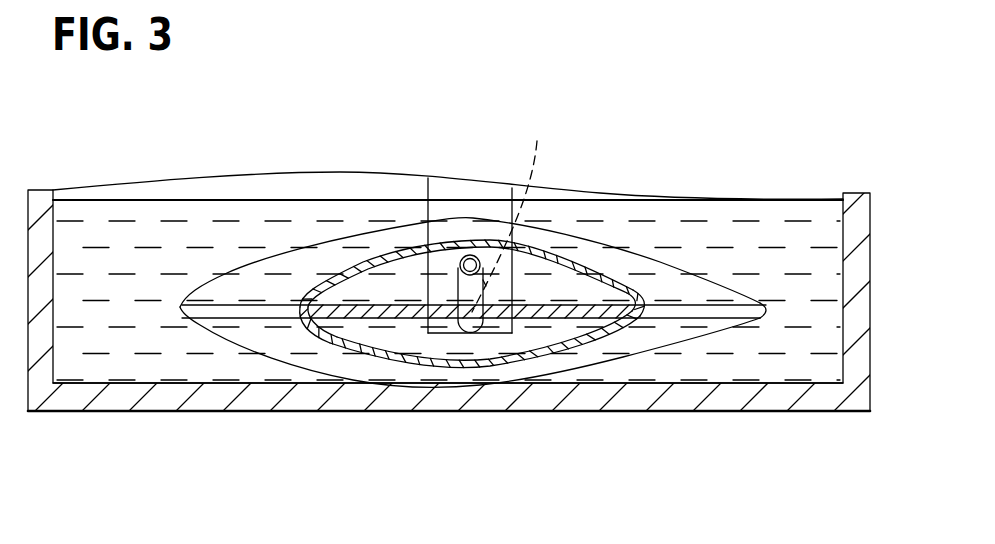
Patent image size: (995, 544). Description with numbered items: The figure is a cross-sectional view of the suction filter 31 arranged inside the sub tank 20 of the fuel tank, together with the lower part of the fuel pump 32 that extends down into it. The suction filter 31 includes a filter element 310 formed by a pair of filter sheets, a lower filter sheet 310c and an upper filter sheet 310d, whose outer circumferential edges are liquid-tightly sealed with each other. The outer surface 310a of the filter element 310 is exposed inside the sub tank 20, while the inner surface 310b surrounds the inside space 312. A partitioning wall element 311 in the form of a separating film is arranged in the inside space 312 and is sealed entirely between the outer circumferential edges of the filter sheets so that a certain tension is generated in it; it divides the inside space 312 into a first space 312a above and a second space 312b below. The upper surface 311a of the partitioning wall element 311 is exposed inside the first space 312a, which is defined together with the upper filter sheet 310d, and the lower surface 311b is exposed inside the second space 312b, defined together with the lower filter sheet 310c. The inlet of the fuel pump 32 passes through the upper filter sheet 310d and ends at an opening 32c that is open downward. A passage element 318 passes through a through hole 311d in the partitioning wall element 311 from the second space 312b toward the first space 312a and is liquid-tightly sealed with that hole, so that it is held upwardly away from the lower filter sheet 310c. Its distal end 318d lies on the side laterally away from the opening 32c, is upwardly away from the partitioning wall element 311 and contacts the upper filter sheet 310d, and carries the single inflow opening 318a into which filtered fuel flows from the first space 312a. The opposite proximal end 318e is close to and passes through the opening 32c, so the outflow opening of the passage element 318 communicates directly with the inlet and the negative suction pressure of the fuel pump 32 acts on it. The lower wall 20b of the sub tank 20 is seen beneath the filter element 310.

The sub tank 20 is at (497, 315).
The tank bottom wall 20b is at (592, 402).
The suction filter 31 is at (510, 289).
The partitioning wall element 311 is at (510, 319).
The upper surface 311a is at (352, 305).
The lower surface 311b is at (389, 322).
The through hole 311d is at (518, 214).
The filter element 310 is at (471, 318).
The outer surface 310a is at (590, 287).
The inner surface 310b is at (612, 275).
The lower filter sheet 310c is at (348, 338).
The upper filter sheet 310d is at (317, 316).
The inside space 312 is at (496, 388).
The first space 312a is at (613, 295).
The second space 312b is at (532, 330).
The passage element 318 is at (490, 263).
The inflow opening 318a is at (470, 255).
The distal end 318d is at (486, 286).
The proximal end 318e is at (472, 334).
The fuel pump 32 is at (436, 322).
The opening 32c is at (487, 335).